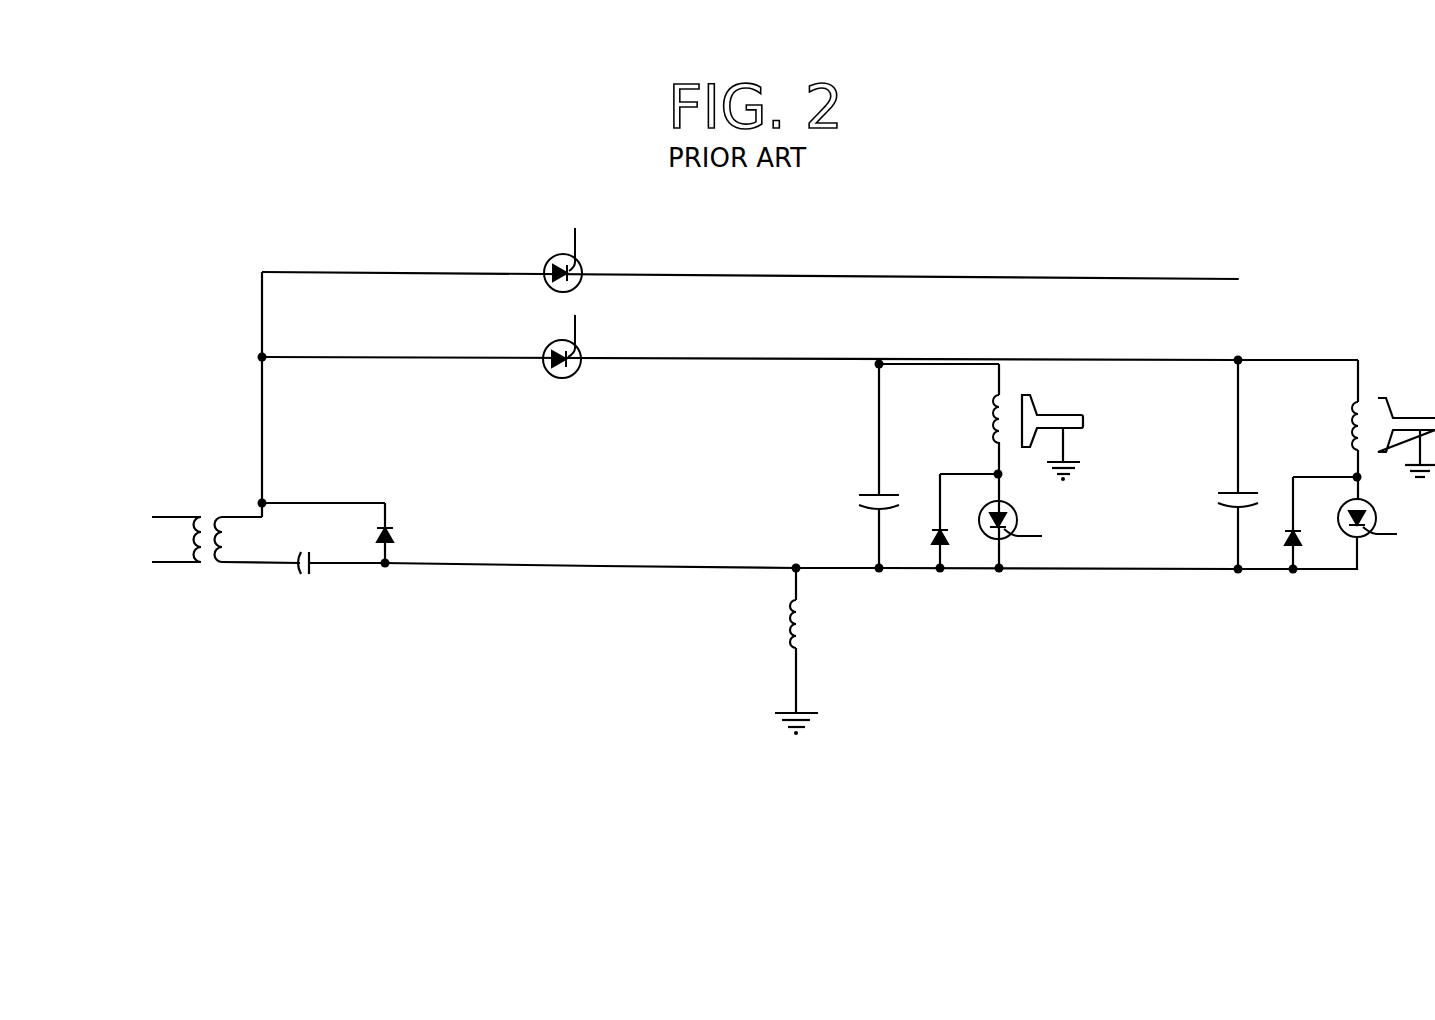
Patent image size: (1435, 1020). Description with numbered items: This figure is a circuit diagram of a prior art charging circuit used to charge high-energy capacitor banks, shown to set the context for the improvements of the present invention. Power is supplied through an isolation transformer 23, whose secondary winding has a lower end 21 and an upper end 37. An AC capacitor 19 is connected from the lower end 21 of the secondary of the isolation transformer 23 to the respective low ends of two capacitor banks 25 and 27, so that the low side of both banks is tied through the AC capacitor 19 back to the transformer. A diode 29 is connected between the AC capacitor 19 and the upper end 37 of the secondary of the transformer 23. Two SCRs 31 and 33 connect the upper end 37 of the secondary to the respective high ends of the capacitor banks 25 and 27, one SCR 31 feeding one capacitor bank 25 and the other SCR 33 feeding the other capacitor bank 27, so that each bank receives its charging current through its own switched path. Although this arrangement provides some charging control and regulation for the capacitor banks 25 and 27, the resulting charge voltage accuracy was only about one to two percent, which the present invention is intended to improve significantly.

The AC capacitor 19 is at (313, 572).
The lower end 21 is at (230, 566).
The isolation transformer 23 is at (203, 508).
The capacitor bank 25 is at (870, 486).
The capacitor bank 27 is at (1217, 484).
The diode 29 is at (395, 538).
The SCR 31 is at (553, 256).
The SCR 33 is at (553, 342).
The upper end 37 is at (214, 517).